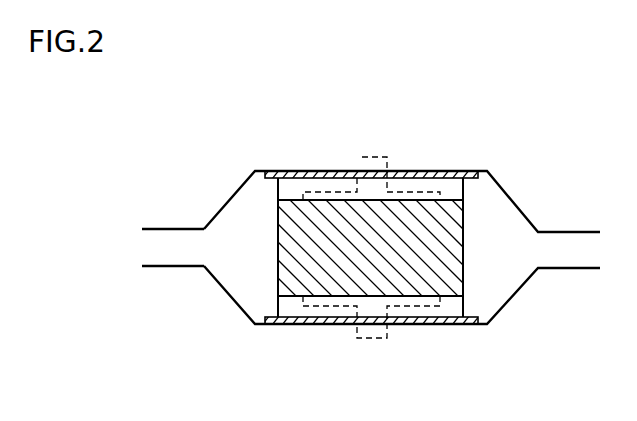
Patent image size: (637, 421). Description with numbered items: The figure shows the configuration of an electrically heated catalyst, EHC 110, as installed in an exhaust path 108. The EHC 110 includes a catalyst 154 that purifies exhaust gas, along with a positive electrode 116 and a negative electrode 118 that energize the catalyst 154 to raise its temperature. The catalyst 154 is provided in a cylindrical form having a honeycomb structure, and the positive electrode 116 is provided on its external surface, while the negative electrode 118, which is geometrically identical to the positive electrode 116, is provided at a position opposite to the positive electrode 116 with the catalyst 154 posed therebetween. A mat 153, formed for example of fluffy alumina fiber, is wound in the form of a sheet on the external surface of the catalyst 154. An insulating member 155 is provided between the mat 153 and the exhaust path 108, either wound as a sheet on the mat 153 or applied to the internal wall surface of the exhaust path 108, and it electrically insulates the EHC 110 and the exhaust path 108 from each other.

The EHC 110 is at (532, 113).
The exhaust path 108 is at (168, 228).
The positive electrode 116 is at (362, 155).
The negative electrode 118 is at (368, 342).
The mat 153 is at (448, 195).
The catalyst 154 is at (447, 277).
The insulating member 155 is at (378, 173).